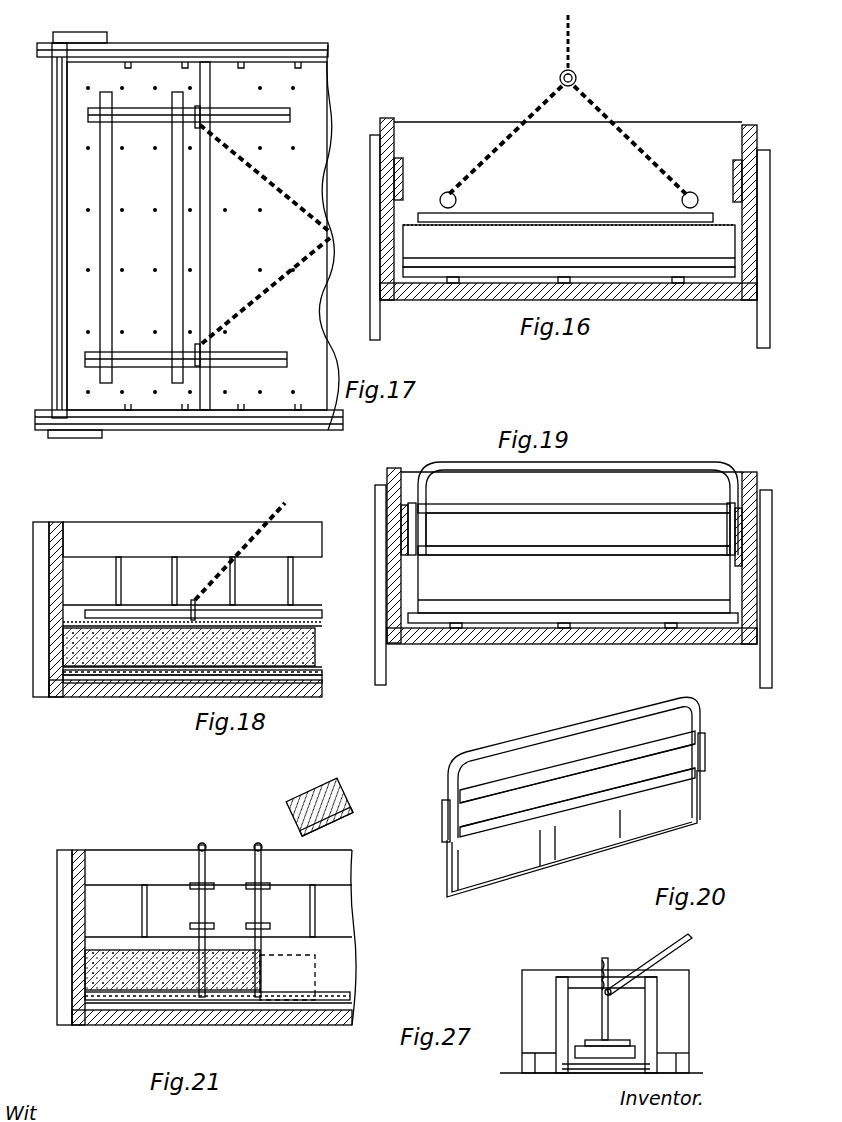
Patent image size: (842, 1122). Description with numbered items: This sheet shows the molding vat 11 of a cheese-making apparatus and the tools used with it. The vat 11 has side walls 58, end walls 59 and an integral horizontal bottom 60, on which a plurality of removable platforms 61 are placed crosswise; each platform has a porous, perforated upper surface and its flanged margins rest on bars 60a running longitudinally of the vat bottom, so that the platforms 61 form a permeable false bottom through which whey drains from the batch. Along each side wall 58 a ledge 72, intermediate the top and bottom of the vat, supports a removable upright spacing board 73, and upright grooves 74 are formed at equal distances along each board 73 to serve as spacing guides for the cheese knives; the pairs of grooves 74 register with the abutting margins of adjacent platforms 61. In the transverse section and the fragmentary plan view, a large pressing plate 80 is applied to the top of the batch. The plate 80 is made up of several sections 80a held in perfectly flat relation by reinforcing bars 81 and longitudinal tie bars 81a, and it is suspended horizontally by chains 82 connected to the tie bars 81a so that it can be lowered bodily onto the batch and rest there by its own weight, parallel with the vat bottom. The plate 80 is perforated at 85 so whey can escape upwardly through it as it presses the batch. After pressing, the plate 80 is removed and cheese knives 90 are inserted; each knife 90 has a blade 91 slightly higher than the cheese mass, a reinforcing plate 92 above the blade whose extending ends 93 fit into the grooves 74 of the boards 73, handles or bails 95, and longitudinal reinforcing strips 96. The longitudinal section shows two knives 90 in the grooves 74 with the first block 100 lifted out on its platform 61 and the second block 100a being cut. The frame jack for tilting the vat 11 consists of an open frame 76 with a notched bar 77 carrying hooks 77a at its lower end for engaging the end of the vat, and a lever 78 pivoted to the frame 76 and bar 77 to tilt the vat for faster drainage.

In FIG. 17, the mold box 11 is at (203, 432).
In FIG. 16, the mold box 11 is at (638, 122).
In FIG. 27, the mold box 11 is at (675, 1005).
In FIG. 17, the side wall 58 is at (255, 46).
In FIG. 16, the side wall 58 is at (758, 135).
In FIG. 19, the side wall 58 is at (758, 485).
In FIG. 18, the side wall 58 is at (88, 532).
In FIG. 21, the side wall 58 is at (206, 937).
In FIG. 17, the end wall 59 is at (55, 362).
In FIG. 16, the end wall 59 is at (692, 138).
In FIG. 18, the end wall 59 is at (44, 522).
In FIG. 18, the bottom 60 is at (97, 685).
In FIG. 16, the bar 60a is at (452, 284).
In FIG. 19, the bar 60a is at (572, 628).
In FIG. 21, the bar 60a is at (338, 1010).
In FIG. 17, the removable platform 61 is at (185, 266).
In FIG. 16, the removable platform 61 is at (569, 272).
In FIG. 19, the removable platform 61 is at (484, 623).
In FIG. 18, the removable platform 61 is at (153, 680).
In FIG. 21, the removable platform 61 is at (180, 998).
In FIG. 16, the ledge 72 is at (390, 196).
In FIG. 19, the ledge 72 is at (418, 540).
In FIG. 21, the ledge 72 is at (158, 935).
In FIG. 17, the spacing board 73 is at (283, 63).
In FIG. 16, the spacing board 73 is at (403, 166).
In FIG. 19, the spacing board 73 is at (400, 535).
In FIG. 18, the spacing board 73 is at (272, 572).
In FIG. 21, the spacing board 73 is at (172, 895).
In FIG. 19, the spacing groove 74 is at (738, 530).
In FIG. 18, the spacing groove 74 is at (170, 562).
In FIG. 21, the spacing groove 74 is at (135, 885).
In FIG. 27, the open frame 76 is at (558, 1032).
In FIG. 27, the notched bar 77 is at (600, 1020).
In FIG. 27, the hook 77a is at (618, 1057).
In FIG. 27, the lever 78 is at (662, 960).
In FIG. 16, the pressing plate 80 is at (520, 198).
In FIG. 18, the pressing plate 80 is at (316, 640).
In FIG. 17, the plate section 80a is at (222, 76).
In FIG. 17, the reinforcing bar 81 is at (107, 272).
In FIG. 16, the reinforcing bar 81 is at (569, 221).
In FIG. 18, the reinforcing bar 81 is at (105, 612).
In FIG. 17, the longitudinal tie bar 81a is at (265, 108).
In FIG. 16, the longitudinal tie bar 81a is at (440, 200).
In FIG. 18, the longitudinal tie bar 81a is at (142, 610).
In FIG. 17, the chain 82 is at (210, 122).
In FIG. 16, the chain 82 is at (500, 118).
In FIG. 18, the chain 82 is at (248, 532).
In FIG. 17, the perforation 85 is at (88, 208).
In FIG. 19, the cheese knife 90 is at (742, 608).
In FIG. 20, the cheese knife 90 is at (445, 866).
In FIG. 21, the cheese knife 90 is at (195, 970).
In FIG. 19, the blade 91 is at (574, 584).
In FIG. 20, the blade 91 is at (510, 870).
In FIG. 19, the reinforcing plate 92 is at (577, 522).
In FIG. 20, the reinforcing plate 92 is at (588, 778).
In FIG. 19, the extending end 93 is at (405, 515).
In FIG. 20, the extending end 93 is at (442, 818).
In FIG. 19, the handle 95 is at (452, 462).
In FIG. 20, the handle 95 is at (526, 733).
In FIG. 21, the handle 95 is at (258, 845).
In FIG. 19, the longitudinal reinforcing strip 96 is at (508, 505).
In FIG. 20, the longitudinal reinforcing strip 96 is at (514, 787).
In FIG. 21, the longitudinal reinforcing strip 96 is at (254, 884).
In FIG. 21, the first block of cheese 100 is at (340, 788).
In FIG. 21, the second block of cheese 100a is at (240, 998).